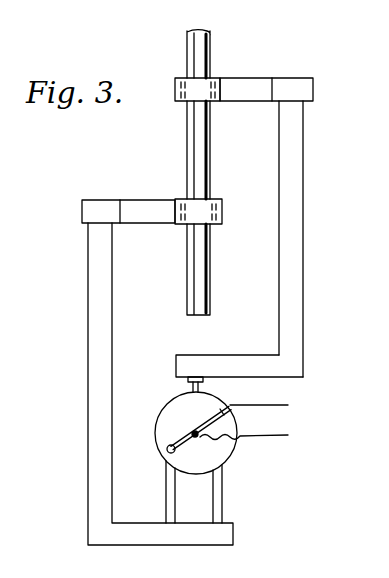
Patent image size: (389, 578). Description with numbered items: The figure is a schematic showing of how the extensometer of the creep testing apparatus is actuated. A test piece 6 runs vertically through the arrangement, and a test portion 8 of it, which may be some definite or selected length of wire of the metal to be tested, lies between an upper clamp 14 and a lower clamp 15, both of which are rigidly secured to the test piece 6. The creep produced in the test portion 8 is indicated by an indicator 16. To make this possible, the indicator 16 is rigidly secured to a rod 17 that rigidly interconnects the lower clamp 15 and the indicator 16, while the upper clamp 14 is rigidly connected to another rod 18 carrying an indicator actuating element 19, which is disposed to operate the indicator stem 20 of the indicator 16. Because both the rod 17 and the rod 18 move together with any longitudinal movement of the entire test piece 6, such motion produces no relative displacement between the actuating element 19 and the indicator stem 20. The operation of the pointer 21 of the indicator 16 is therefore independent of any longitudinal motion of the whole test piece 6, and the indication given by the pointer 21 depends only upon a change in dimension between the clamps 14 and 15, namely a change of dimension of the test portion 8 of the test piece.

The test piece 6 is at (211, 33).
The test portion 8 is at (211, 137).
The upper clamp 14 is at (221, 78).
The lower clamp 15 is at (150, 200).
The indicator 16 is at (238, 448).
The rod 17 is at (88, 407).
The rod 18 is at (304, 218).
The indicator actuating element 19 is at (230, 354).
The indicator stem 20 is at (205, 387).
The pointer 21 is at (207, 422).